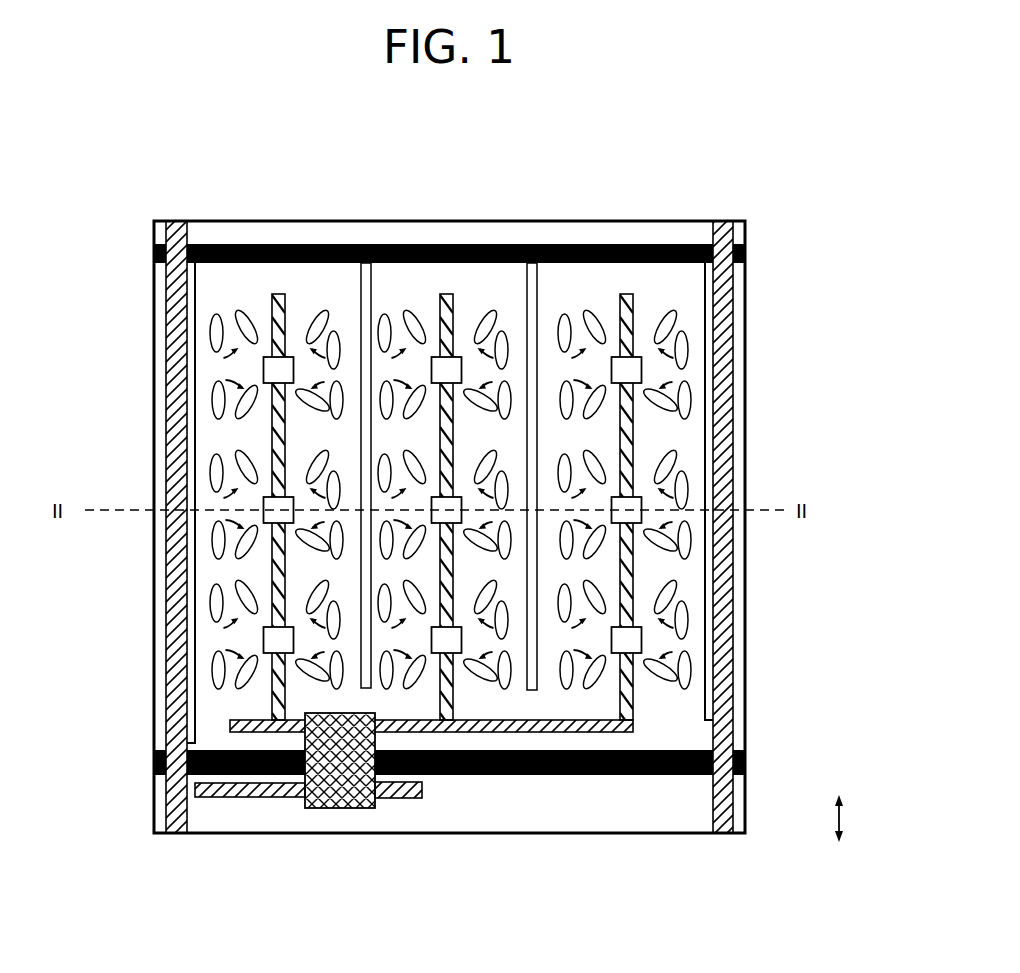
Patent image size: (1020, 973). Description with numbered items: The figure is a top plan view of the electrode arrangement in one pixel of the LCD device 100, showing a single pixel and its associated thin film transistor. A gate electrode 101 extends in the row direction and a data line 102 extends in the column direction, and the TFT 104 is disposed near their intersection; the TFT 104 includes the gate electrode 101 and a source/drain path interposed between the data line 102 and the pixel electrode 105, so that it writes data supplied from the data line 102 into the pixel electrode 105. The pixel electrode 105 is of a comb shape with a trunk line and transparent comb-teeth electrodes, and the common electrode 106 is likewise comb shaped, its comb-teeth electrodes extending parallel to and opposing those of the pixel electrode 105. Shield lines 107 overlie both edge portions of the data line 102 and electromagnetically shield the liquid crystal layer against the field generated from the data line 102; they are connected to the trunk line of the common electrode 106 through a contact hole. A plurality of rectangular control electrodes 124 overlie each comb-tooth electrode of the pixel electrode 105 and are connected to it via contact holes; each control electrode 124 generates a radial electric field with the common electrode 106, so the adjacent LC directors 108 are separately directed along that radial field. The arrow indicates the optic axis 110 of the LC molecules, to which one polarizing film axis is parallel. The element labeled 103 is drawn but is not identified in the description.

The LCD device 100 is at (764, 125).
The gate electrode 101 is at (747, 763).
The data line 102 is at (733, 694).
The lower hatched electrode line 103 is at (253, 790).
The TFT 104 is at (346, 795).
The pixel electrode 105 is at (447, 294).
The common electrode 106 is at (360, 293).
The shield line 107 is at (745, 292).
The LC director 108 is at (705, 398).
The optic axis 110 is at (840, 815).
The control electrode 124 is at (632, 362).